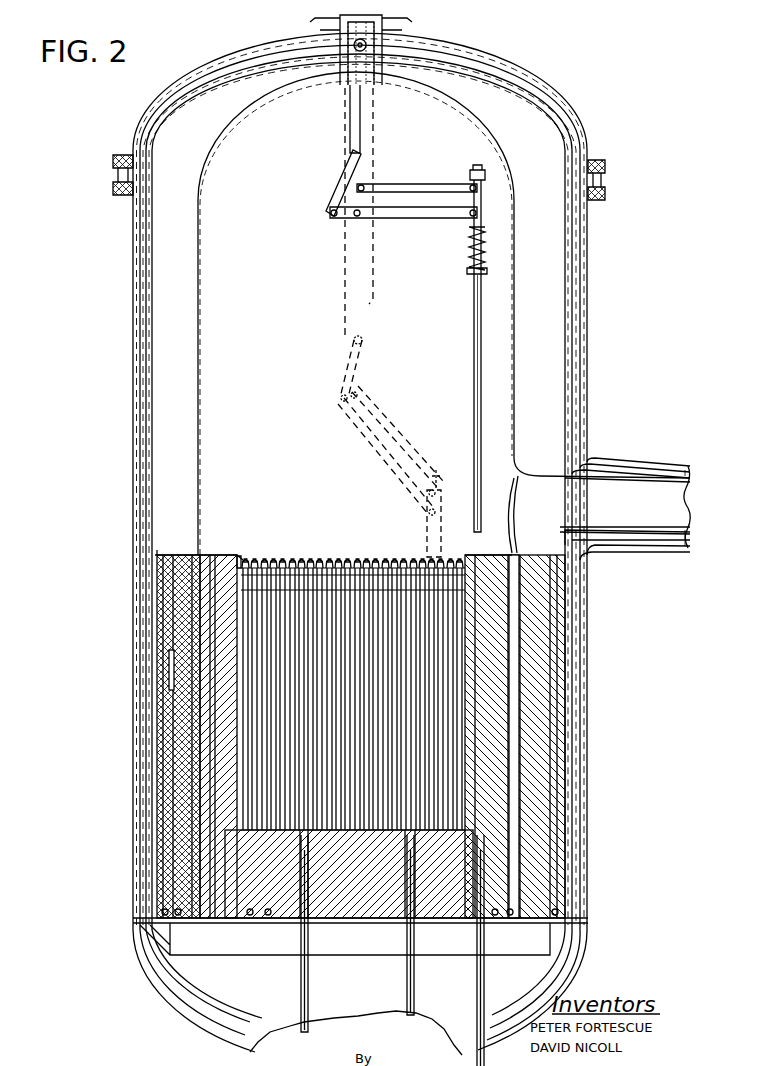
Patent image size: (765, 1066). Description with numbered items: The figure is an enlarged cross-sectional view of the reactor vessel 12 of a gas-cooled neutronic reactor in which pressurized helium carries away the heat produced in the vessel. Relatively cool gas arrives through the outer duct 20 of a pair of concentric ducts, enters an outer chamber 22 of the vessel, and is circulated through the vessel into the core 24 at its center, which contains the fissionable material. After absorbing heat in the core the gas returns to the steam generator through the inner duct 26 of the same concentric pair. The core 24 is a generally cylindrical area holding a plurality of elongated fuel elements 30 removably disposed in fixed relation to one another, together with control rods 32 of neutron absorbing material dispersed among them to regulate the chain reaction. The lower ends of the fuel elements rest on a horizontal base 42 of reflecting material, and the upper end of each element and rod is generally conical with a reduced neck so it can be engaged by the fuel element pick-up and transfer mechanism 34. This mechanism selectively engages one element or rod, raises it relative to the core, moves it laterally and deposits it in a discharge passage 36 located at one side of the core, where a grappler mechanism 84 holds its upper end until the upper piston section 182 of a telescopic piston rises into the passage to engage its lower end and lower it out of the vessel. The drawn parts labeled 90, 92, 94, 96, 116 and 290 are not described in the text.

The reactor vessel 12 is at (585, 272).
The outer duct 20 is at (622, 466).
The outer chamber 22 is at (548, 408).
The core 24 is at (283, 703).
The inner duct 26 is at (640, 540).
The fuel elements 30 is at (478, 382).
The control rods 32 is at (293, 560).
The fuel element pick-up and transfer mechanism 34 is at (395, 24).
The discharge passage 36 is at (508, 556).
The horizontal base 42 is at (378, 884).
The grappler mechanism 84 is at (406, 186).
The spring coupling 90 is at (467, 252).
The upper link 92 is at (400, 186).
The lower link 94 is at (425, 219).
The pivot link 96 is at (340, 193).
The end fuel element 116 is at (242, 560).
The upper piston section 182 is at (474, 1055).
The support rods 290 is at (310, 995).